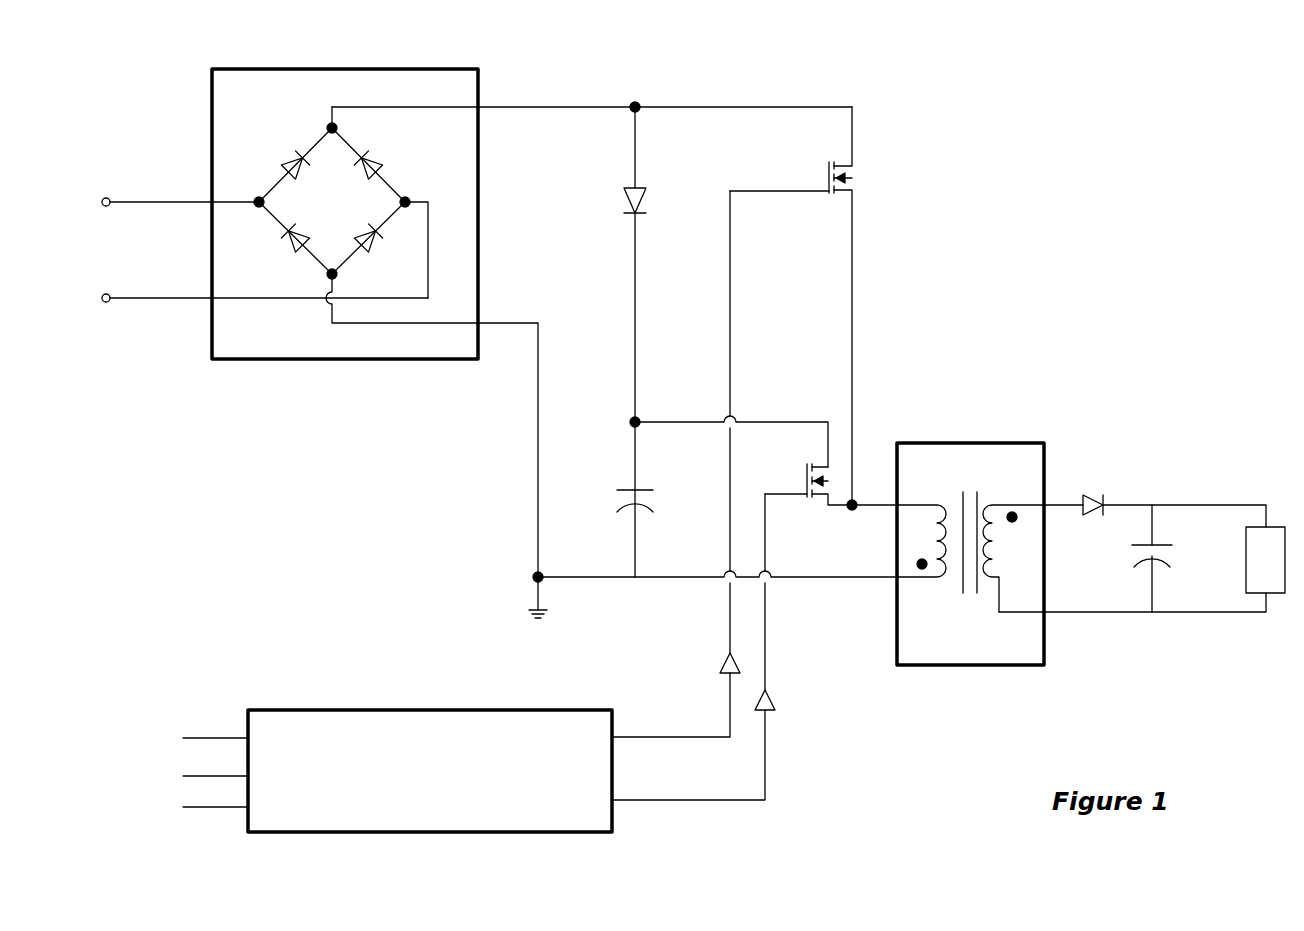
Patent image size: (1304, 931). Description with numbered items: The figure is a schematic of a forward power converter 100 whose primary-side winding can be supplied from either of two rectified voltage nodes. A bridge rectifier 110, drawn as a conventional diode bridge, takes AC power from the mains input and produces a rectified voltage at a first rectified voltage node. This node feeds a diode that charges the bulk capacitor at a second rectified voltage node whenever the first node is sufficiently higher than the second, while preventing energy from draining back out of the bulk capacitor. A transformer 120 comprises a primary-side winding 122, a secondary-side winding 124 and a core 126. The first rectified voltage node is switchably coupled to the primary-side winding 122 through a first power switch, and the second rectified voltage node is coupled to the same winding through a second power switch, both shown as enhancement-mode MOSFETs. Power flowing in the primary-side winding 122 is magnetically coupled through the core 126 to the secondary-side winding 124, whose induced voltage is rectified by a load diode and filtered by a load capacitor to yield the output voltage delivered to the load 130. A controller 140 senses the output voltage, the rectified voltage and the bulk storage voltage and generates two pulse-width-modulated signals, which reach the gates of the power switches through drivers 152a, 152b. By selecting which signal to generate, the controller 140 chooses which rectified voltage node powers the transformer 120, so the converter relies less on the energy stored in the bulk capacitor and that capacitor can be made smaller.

The forward power converter 100 is at (1166, 87).
The bridge rectifier 110 is at (283, 199).
The transformer 120 is at (970, 540).
The primary-side winding 122 is at (924, 527).
The secondary-side winding 124 is at (1013, 545).
The core 126 is at (972, 561).
The load 130 is at (1275, 536).
The controller 140 is at (416, 757).
The driver 152a is at (676, 685).
The driver 152b is at (720, 739).